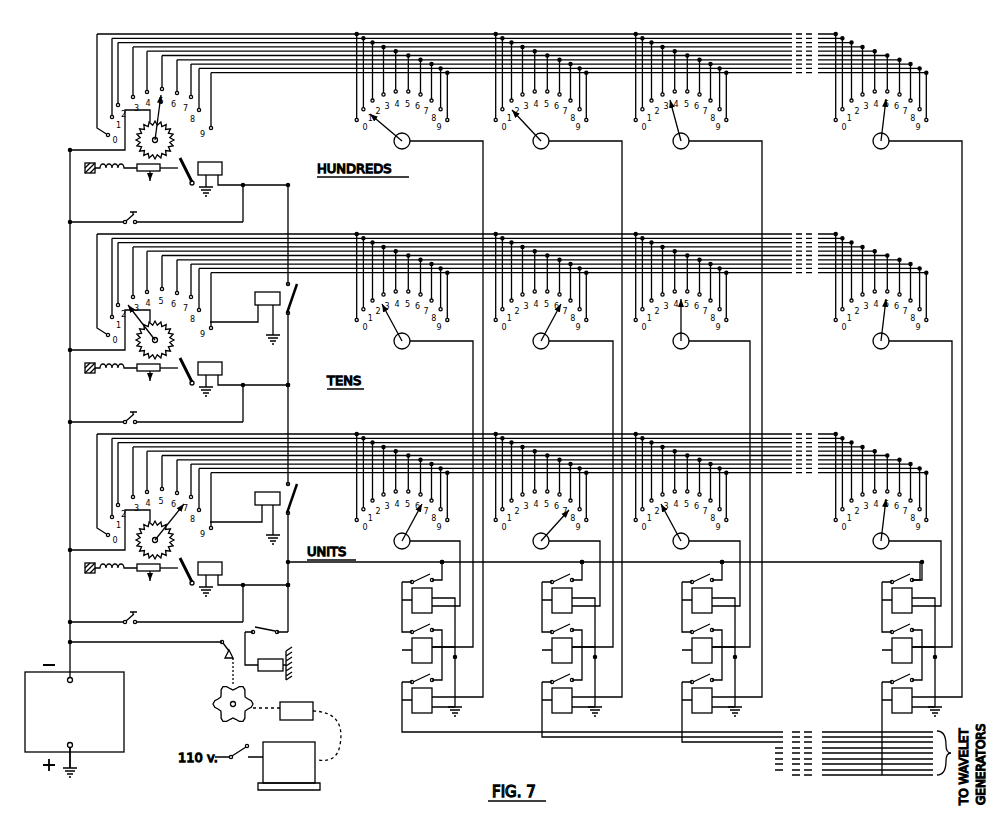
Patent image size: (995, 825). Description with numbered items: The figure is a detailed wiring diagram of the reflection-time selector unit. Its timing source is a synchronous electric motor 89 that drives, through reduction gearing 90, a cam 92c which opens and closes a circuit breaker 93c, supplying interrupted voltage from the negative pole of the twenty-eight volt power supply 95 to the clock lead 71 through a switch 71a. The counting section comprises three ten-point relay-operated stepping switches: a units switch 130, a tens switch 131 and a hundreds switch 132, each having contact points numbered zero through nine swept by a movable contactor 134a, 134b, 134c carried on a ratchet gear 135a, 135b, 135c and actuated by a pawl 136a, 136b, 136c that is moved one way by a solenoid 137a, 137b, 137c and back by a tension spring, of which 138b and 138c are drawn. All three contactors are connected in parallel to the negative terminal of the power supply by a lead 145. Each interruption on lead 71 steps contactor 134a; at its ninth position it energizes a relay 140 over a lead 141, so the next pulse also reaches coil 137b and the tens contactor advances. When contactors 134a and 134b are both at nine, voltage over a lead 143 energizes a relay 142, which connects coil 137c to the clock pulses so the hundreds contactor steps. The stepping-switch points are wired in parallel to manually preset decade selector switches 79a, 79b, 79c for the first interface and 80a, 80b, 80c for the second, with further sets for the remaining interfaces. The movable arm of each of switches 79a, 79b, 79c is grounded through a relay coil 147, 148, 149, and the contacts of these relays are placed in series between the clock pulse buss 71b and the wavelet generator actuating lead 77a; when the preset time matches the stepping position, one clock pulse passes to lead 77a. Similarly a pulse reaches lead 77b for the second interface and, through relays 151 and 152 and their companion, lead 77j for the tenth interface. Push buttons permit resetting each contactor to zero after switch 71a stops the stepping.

The hundreds stepping switch 132 is at (95, 136).
The tens stepping switch 131 is at (95, 341).
The units stepping switch 130 is at (95, 542).
The hundreds movable contactor 134c is at (170, 92).
The tens movable contactor 134b is at (132, 312).
The units movable contactor 134a is at (180, 518).
The hundreds ratchet gear 135c is at (180, 158).
The tens ratchet gear 135b is at (180, 358).
The units ratchet gear 135a is at (150, 572).
The hundreds pawl 136c is at (148, 176).
The tens pawl 136b is at (148, 377).
The units pawl 136a is at (150, 576).
The hundreds solenoid 137c is at (223, 168).
The tens solenoid 137b is at (223, 368).
The units solenoid 137a is at (223, 568).
The hundreds tension spring 138c is at (117, 174).
The tens tension spring 138b is at (118, 375).
The relay 151 is at (892, 650).
The relay 152 is at (892, 700).
The lead 145 is at (70, 455).
The relay 142 is at (296, 297).
The lead 143 is at (226, 322).
The relay 140 is at (296, 498).
The lead 141 is at (232, 522).
The hundreds decade selector switch 79c is at (409, 125).
The hundreds decade selector switch 80c is at (549, 125).
The tens decade selector switch 79b is at (409, 328).
The tens decade selector switch 80b is at (549, 328).
The units decade selector switch 79a is at (409, 528).
The units decade selector switch 80a is at (549, 528).
The clock pulse buss 71b is at (380, 566).
The switch 71a is at (270, 631).
The lead 71 is at (247, 644).
The relay coil 147 is at (410, 600).
The relay coil 148 is at (410, 652).
The relay coil 149 is at (410, 702).
The wavelet generator actuating lead 77a is at (426, 735).
The wavelet generator actuating lead 77b is at (566, 740).
The wavelet generator actuating lead 77j is at (890, 777).
The power supply 95 is at (124, 697).
The circuit breaker 93c is at (222, 652).
The cam 92c is at (217, 712).
The reduction gearing 90 is at (301, 702).
The synchronous electric motor 89 is at (263, 774).